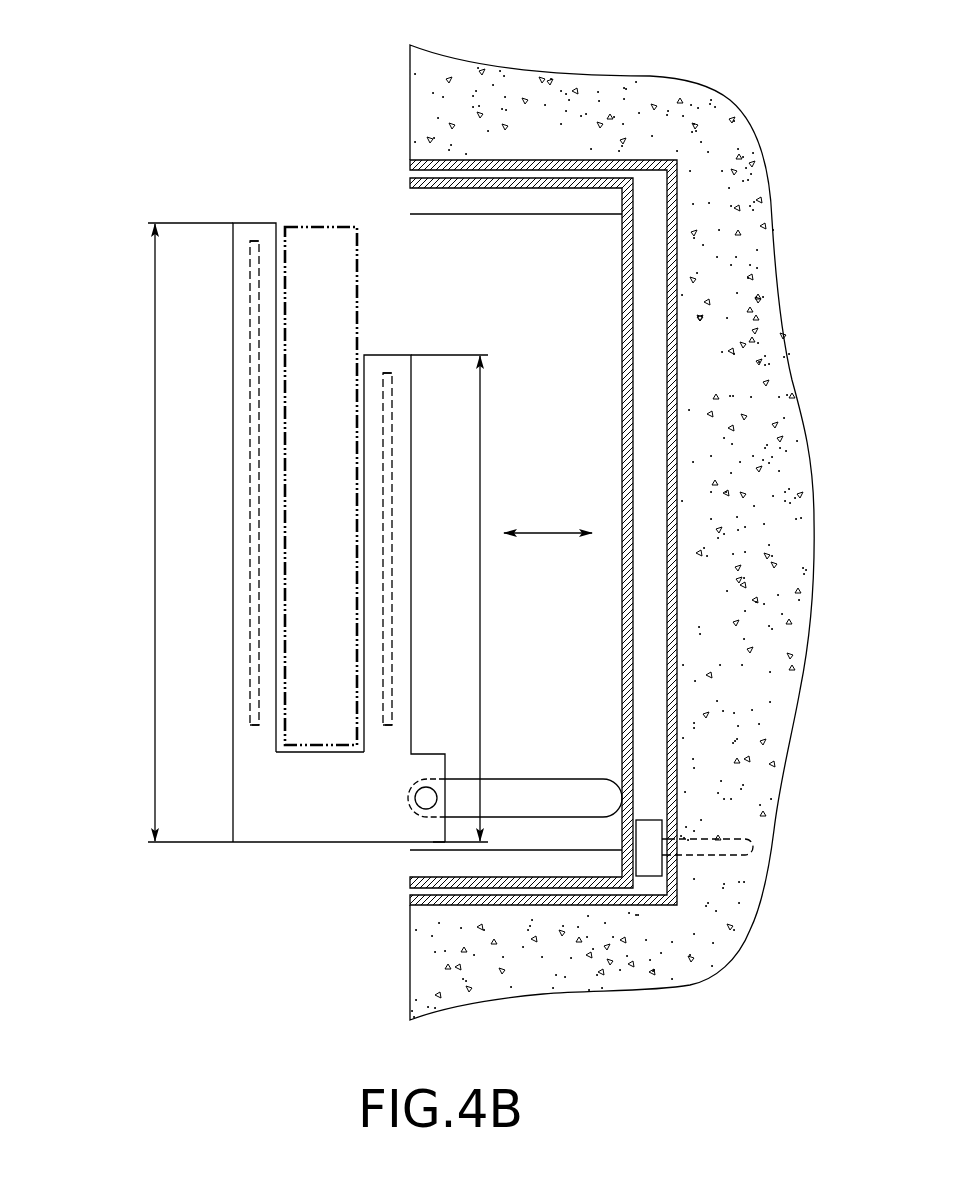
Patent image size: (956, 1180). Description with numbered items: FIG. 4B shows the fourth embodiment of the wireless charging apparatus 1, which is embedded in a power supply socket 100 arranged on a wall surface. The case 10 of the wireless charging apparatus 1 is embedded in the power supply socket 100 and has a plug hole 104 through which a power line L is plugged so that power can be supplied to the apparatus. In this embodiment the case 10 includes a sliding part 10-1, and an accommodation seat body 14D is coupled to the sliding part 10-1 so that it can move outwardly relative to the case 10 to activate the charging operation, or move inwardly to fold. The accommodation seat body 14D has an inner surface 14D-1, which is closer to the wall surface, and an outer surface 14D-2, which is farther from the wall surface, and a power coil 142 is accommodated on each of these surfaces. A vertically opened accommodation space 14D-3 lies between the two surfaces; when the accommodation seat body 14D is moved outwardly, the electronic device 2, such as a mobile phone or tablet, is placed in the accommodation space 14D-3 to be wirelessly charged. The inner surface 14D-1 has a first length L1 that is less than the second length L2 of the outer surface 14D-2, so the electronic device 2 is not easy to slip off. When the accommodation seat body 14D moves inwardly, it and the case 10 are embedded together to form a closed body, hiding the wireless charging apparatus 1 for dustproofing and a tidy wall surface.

The power supply socket 100 is at (563, 160).
The wireless charging apparatus 1 is at (372, 878).
The case 10 is at (410, 164).
The sliding part 10-1 is at (524, 796).
The electronic device 2 is at (325, 234).
The accommodation seat body 14D is at (236, 469).
The inner surface 14D-1 is at (388, 352).
The outer surface 14D-2 is at (256, 491).
The accommodation space 14D-3 is at (282, 222).
The power coil 142 is at (254, 727).
The plug hole 104 is at (647, 830).
The power line L is at (719, 849).
The first length L1 is at (449, 598).
The second length L2 is at (177, 532).